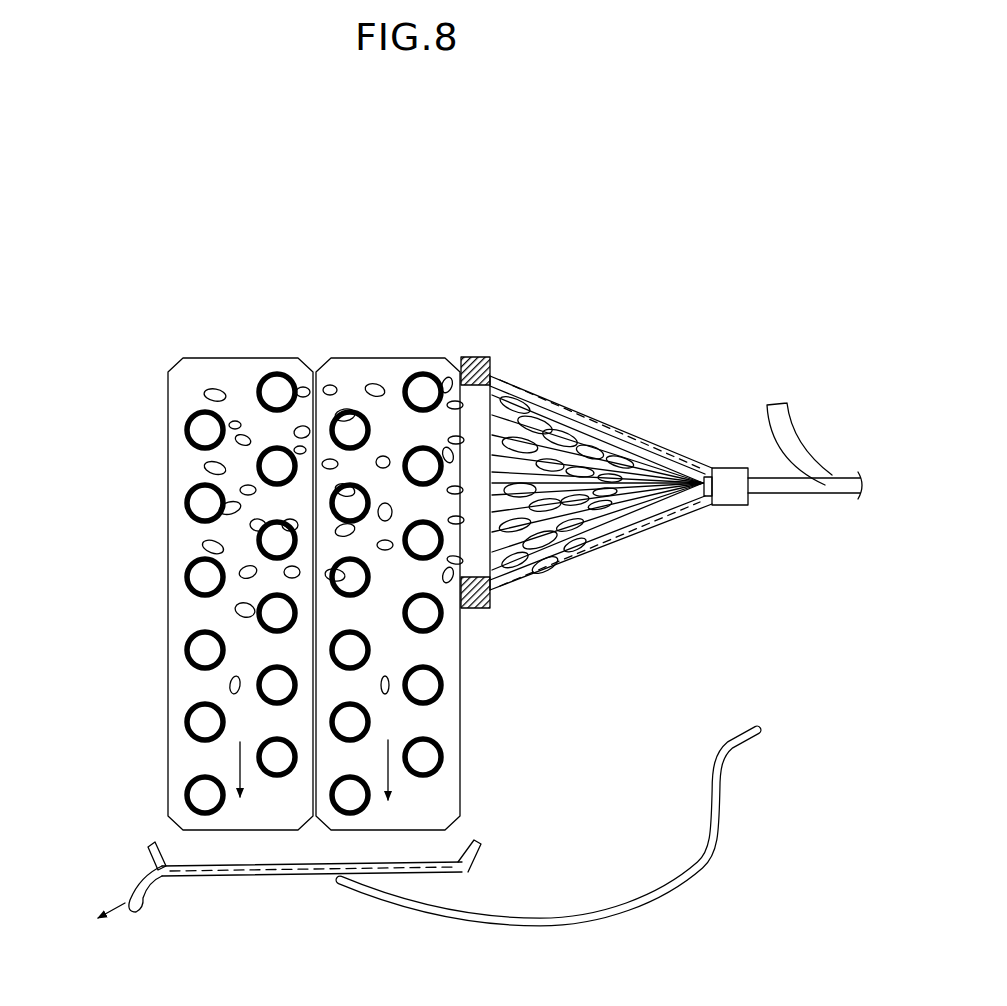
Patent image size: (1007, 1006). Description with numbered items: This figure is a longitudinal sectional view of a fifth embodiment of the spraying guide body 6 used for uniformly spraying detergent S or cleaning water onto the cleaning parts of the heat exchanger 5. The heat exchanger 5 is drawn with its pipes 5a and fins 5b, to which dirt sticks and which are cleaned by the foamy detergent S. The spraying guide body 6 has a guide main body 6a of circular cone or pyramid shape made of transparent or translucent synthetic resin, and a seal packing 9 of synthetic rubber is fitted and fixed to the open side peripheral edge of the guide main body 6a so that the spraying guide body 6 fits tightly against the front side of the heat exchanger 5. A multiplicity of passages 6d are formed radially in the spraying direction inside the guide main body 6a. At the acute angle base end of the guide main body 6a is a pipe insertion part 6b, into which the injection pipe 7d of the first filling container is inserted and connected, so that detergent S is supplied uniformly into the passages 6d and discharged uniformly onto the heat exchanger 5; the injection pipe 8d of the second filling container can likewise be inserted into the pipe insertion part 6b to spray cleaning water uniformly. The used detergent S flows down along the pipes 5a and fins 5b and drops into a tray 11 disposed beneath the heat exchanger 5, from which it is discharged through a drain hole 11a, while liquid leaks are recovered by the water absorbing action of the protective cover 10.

The heat exchanger 5 is at (363, 534).
The pipes 5a is at (205, 580).
The fins 5b is at (185, 392).
The detergent S is at (355, 405).
The seal packing 9 is at (473, 358).
The spraying guide body 6 is at (637, 456).
The passages 6d is at (645, 456).
The guide main body 6a is at (700, 505).
The pipe insertion part 6b is at (738, 468).
The injection pipe 7d is at (795, 494).
The injection pipe 8d is at (790, 418).
The protective cover 10 is at (600, 922).
The tray 11 is at (274, 879).
The drain hole 11a is at (150, 866).